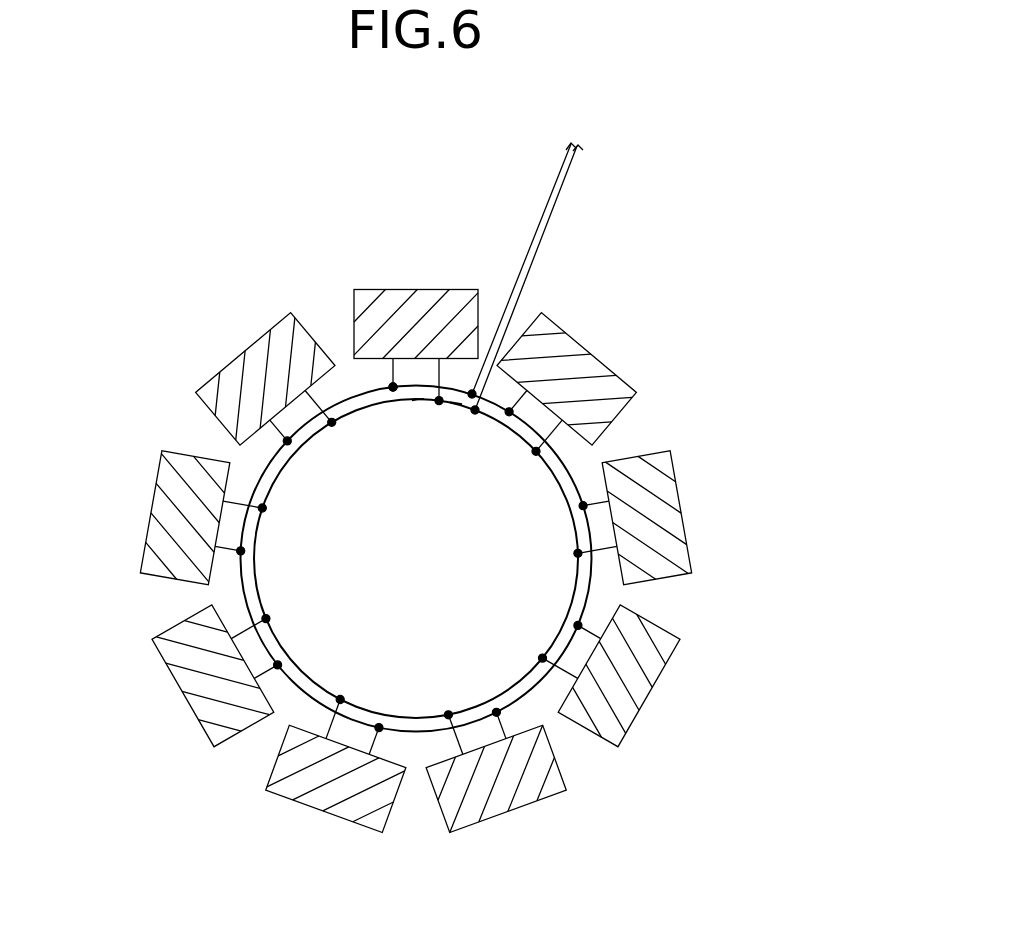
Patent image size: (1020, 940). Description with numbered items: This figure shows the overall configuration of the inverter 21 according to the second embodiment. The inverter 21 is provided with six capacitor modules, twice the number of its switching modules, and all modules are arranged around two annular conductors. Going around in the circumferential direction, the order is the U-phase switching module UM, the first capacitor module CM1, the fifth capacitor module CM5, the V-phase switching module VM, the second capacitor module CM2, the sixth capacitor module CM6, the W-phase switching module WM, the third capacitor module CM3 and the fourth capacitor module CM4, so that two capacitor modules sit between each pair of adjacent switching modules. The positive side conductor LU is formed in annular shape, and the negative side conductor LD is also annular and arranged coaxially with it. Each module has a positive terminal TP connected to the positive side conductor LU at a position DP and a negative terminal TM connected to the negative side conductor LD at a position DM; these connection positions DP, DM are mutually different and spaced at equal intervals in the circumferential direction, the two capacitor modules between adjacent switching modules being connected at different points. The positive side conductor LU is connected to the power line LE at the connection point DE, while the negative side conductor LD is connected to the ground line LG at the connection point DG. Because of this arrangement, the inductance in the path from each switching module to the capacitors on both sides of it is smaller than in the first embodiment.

The inverter 21 is at (751, 143).
The ground line LG is at (568, 147).
The power line LE is at (583, 152).
The U-phase switching module UM is at (433, 289).
The negative terminal TM is at (388, 368).
The positive terminal TP is at (440, 360).
The connection position DM is at (387, 392).
The connection position DP is at (423, 402).
The connection point DG is at (456, 404).
The connection point DE is at (476, 414).
The positive side conductor LU is at (258, 538).
The negative side conductor LD is at (240, 584).
The first capacitor module CM1 is at (248, 344).
The second capacitor module CM2 is at (312, 808).
The third capacitor module CM3 is at (688, 535).
The fourth capacitor module CM4 is at (604, 356).
The fifth capacitor module CM5 is at (152, 502).
The sixth capacitor module CM6 is at (495, 817).
The V-phase switching module VM is at (173, 687).
The W-phase switching module WM is at (641, 706).